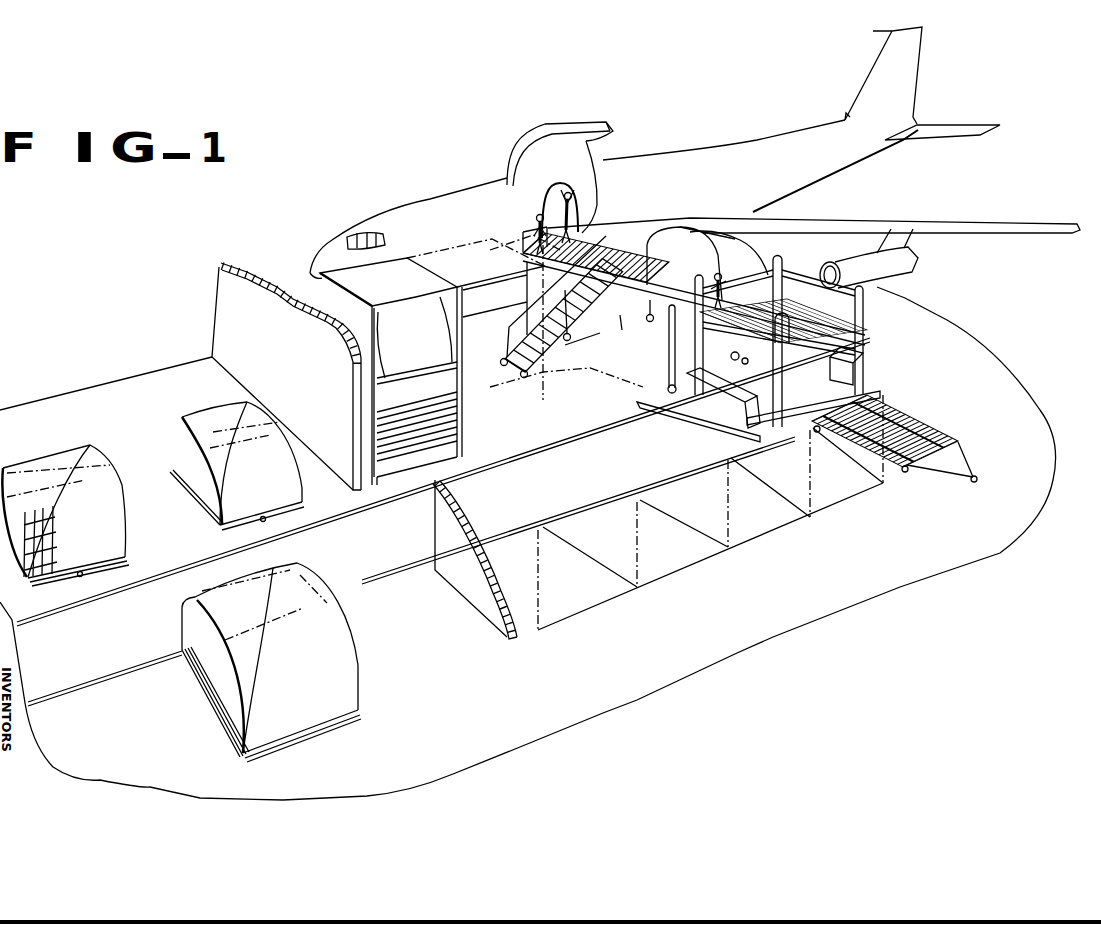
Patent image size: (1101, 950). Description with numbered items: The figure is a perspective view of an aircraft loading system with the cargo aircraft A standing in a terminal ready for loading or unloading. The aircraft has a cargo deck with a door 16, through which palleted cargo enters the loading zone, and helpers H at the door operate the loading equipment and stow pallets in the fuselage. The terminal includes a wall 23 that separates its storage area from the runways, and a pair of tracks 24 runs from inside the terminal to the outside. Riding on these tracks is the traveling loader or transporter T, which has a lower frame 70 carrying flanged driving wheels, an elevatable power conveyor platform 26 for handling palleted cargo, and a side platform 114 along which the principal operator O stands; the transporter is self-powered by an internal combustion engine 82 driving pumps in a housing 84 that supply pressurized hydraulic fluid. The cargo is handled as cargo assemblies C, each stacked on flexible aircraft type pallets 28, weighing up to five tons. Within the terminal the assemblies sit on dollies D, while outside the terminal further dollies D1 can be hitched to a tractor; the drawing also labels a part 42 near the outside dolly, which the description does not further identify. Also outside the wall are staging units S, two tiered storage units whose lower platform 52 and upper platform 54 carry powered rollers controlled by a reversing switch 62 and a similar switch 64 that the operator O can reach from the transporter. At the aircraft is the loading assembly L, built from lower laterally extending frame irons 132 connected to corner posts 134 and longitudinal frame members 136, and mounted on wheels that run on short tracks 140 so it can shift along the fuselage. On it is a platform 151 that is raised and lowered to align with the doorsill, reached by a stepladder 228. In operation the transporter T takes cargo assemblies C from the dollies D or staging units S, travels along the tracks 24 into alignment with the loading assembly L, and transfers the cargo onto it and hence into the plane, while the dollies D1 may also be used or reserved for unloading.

The cargo aircraft A is at (477, 172).
The door 16 is at (517, 142).
The helpers H is at (555, 201).
The loading assembly L is at (615, 214).
The platform 151 is at (633, 244).
The stepladder 228 is at (548, 288).
The cargo assemblies C is at (713, 222).
The pallets 28 is at (195, 490).
The dollies D is at (225, 528).
The tracks 24 is at (655, 478).
The wall 23 is at (242, 303).
The staging units S is at (470, 242).
The switch 64 is at (380, 340).
The upper platform 54 is at (413, 380).
The lower platform 52 is at (430, 457).
The reversing switch 62 is at (352, 419).
The transporter T is at (885, 333).
The platform 26 is at (840, 314).
The platform 114 is at (740, 335).
The frame irons 132 is at (670, 378).
The corner posts 134 is at (655, 330).
The frame members 136 is at (598, 316).
The tracks 140 is at (578, 340).
The lower frame 70 is at (862, 394).
The internal combustion engine 82 is at (845, 372).
The housing 84 is at (842, 346).
The dollies D1 is at (930, 417).
The ramp support leg 42 is at (975, 476).
The principal operator O is at (736, 267).